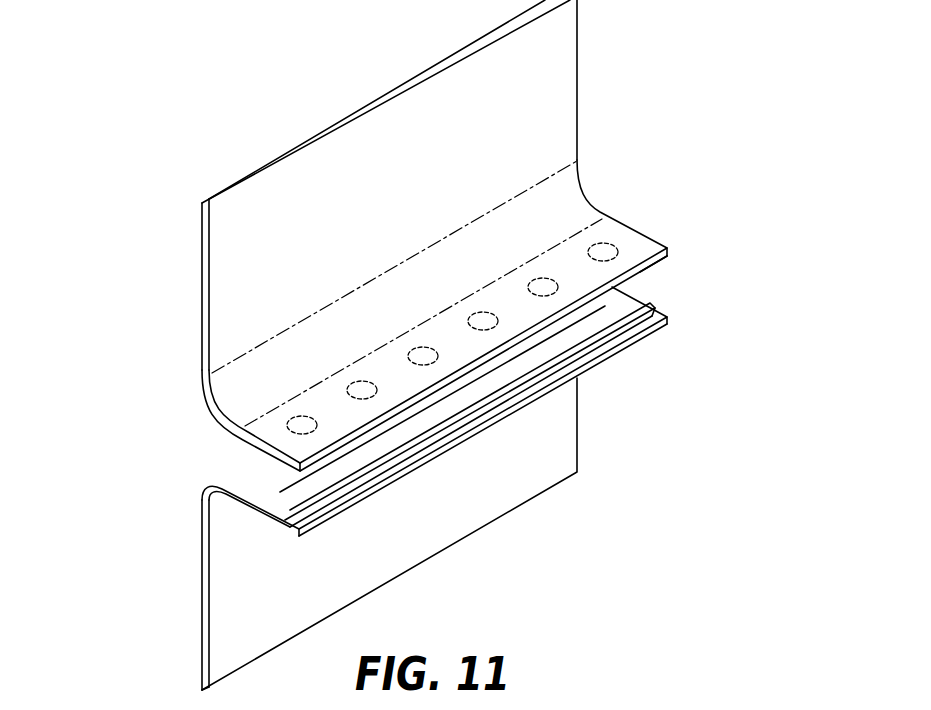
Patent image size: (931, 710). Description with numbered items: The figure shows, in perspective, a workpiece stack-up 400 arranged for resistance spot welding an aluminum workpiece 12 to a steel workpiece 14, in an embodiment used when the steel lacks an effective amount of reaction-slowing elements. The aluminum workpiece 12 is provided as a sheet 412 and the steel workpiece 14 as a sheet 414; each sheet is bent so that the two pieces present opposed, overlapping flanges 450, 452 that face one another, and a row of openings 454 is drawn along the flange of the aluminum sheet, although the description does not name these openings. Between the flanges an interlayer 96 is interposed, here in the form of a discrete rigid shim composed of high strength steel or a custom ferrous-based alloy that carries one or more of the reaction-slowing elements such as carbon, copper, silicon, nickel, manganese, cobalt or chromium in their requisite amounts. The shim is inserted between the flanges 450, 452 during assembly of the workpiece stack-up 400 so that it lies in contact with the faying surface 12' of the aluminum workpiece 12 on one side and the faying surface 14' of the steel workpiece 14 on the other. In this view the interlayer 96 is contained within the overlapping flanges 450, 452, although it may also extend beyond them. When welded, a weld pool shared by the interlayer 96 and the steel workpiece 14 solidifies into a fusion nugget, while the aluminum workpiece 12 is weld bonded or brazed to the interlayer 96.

The workpiece stack-up 400 is at (172, 302).
The aluminum workpiece 12 is at (487, 235).
The sheet 412 is at (563, 142).
The flange 450 is at (610, 230).
The apertures in flange 454 is at (610, 240).
The faying surface 12' is at (701, 255).
The steel workpiece 14 is at (458, 488).
The sheet 414 is at (563, 415).
The faying surface 14' is at (494, 411).
The flange 452 is at (658, 308).
The interlayer 96 is at (277, 508).